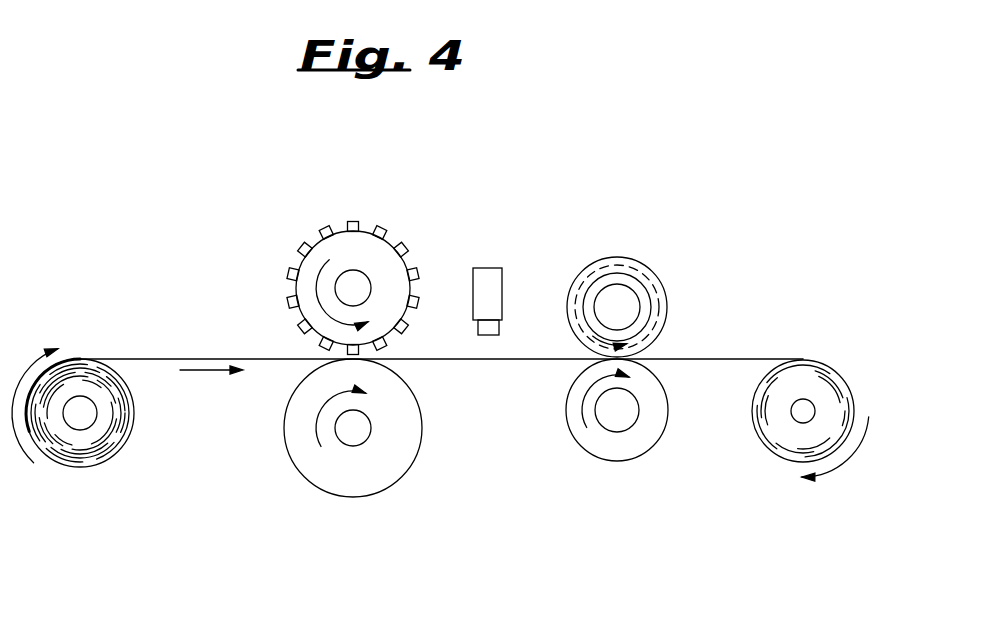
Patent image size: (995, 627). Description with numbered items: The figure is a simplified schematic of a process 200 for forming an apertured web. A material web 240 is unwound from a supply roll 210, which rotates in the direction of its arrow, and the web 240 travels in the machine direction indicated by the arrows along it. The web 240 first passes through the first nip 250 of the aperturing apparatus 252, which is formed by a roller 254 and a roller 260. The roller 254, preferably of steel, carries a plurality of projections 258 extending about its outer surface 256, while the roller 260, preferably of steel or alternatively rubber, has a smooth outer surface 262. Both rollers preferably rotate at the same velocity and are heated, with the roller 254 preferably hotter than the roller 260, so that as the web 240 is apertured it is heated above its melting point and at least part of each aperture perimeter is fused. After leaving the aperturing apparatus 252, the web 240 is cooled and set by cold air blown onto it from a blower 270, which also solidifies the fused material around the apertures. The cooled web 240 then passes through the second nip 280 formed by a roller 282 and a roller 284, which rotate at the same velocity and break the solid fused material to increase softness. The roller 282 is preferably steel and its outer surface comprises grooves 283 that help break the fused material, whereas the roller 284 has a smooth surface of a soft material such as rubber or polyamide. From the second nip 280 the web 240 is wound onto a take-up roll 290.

The process 200 is at (205, 185).
The supply roll 210 is at (83, 462).
The web 240 is at (147, 359).
The first nip 250 is at (298, 365).
The aperturing apparatus 252 is at (392, 232).
The roller 254 is at (297, 262).
The outer surface 256 is at (386, 250).
The projections 258 is at (378, 228).
The roller 260 is at (392, 461).
The smooth outer surface 262 is at (358, 498).
The blower 270 is at (493, 285).
The second nip 280 is at (576, 367).
The roller 282 is at (650, 283).
The grooves 283 is at (640, 268).
The roller 284 is at (645, 438).
The take-up roll 290 is at (818, 377).